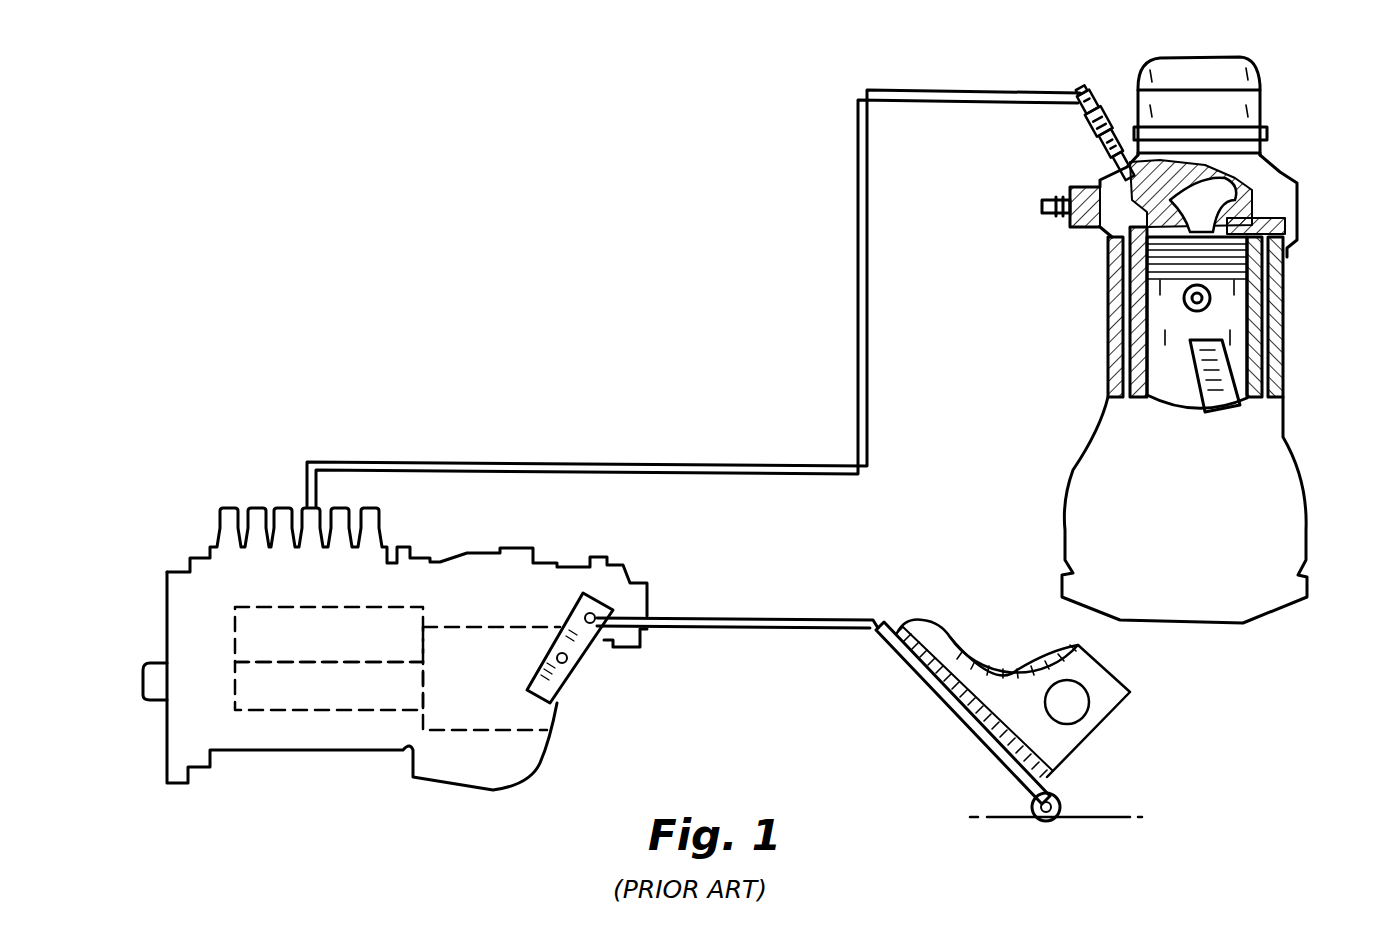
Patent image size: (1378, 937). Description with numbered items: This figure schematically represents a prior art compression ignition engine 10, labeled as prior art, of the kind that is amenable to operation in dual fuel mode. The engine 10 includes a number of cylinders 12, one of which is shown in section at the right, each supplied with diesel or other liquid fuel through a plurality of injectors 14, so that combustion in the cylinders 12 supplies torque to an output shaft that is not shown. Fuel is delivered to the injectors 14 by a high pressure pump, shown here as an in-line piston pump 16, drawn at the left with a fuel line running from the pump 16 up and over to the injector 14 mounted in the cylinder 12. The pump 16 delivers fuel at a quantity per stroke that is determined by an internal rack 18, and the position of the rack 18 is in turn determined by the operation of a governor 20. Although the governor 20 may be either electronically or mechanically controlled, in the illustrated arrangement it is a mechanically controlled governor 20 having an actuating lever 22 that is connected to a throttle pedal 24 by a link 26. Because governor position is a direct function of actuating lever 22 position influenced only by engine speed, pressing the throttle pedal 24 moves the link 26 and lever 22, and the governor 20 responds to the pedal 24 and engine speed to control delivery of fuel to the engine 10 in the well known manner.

The compression ignition engine 10 is at (666, 190).
The cylinder 12 is at (1230, 310).
The injector 14 is at (1082, 147).
The in-line piston pump 16 is at (243, 612).
The rack 18 is at (245, 695).
The governor 20 is at (513, 730).
The actuating lever 22 is at (588, 608).
The throttle pedal 24 is at (957, 712).
The link 26 is at (788, 623).